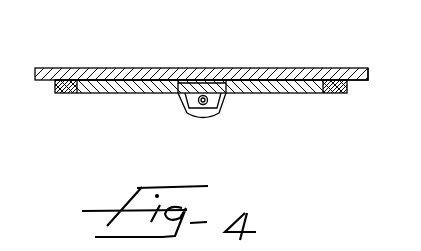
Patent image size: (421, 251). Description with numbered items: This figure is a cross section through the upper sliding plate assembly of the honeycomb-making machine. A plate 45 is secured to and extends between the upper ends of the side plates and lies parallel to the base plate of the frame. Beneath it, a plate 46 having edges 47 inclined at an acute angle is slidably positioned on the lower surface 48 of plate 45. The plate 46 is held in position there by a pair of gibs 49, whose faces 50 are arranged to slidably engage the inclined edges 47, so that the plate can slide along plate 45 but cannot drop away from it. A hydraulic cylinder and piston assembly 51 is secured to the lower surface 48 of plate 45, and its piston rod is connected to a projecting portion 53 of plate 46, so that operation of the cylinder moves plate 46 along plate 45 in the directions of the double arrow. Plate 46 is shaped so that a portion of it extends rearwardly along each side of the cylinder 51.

The plate 45 is at (255, 68).
The plate 46 is at (132, 95).
The edges 47 is at (78, 85).
The lower surface 48 is at (361, 81).
The gibs 49 is at (333, 94).
The faces 50 is at (80, 94).
The hydraulic cylinder and piston assembly 51 is at (202, 119).
The projecting portion 53 is at (224, 99).